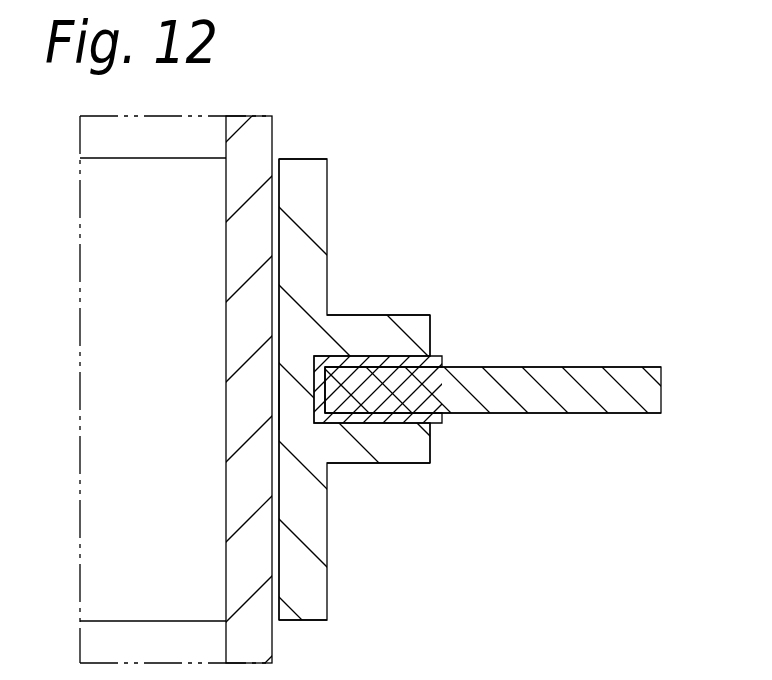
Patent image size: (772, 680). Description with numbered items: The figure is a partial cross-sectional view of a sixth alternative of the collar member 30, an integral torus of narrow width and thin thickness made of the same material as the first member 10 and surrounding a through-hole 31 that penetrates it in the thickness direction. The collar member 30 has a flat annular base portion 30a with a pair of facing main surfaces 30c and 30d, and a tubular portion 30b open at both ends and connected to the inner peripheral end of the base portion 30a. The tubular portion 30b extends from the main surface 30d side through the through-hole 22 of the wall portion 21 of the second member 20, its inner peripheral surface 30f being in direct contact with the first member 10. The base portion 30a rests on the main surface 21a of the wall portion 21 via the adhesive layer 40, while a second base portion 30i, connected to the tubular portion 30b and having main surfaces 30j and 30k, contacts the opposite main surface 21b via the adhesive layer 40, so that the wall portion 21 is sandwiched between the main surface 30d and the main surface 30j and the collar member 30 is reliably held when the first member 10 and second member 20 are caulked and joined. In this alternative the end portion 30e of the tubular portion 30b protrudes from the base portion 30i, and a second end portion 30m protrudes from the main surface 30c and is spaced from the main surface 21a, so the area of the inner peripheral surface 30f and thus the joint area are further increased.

The first member 10 is at (273, 130).
The through-hole 31 is at (110, 355).
The collar member 30 is at (390, 315).
The base portion 30a is at (417, 330).
The tubular portion 30b is at (288, 406).
The main surface 30c is at (366, 315).
The main surface 30d is at (413, 367).
The end portion 30e is at (310, 585).
The inner peripheral surface 30f is at (280, 443).
The base portion 30i is at (418, 437).
The main surface 30j is at (337, 412).
The main surface 30k is at (405, 463).
The end portion 30m is at (310, 178).
The adhesive layer 40 is at (441, 357).
The second member 20 is at (534, 342).
The wall portion 21 is at (640, 367).
The main surface 21a is at (563, 367).
The main surface 21b is at (602, 413).
The through-hole 22 is at (370, 475).